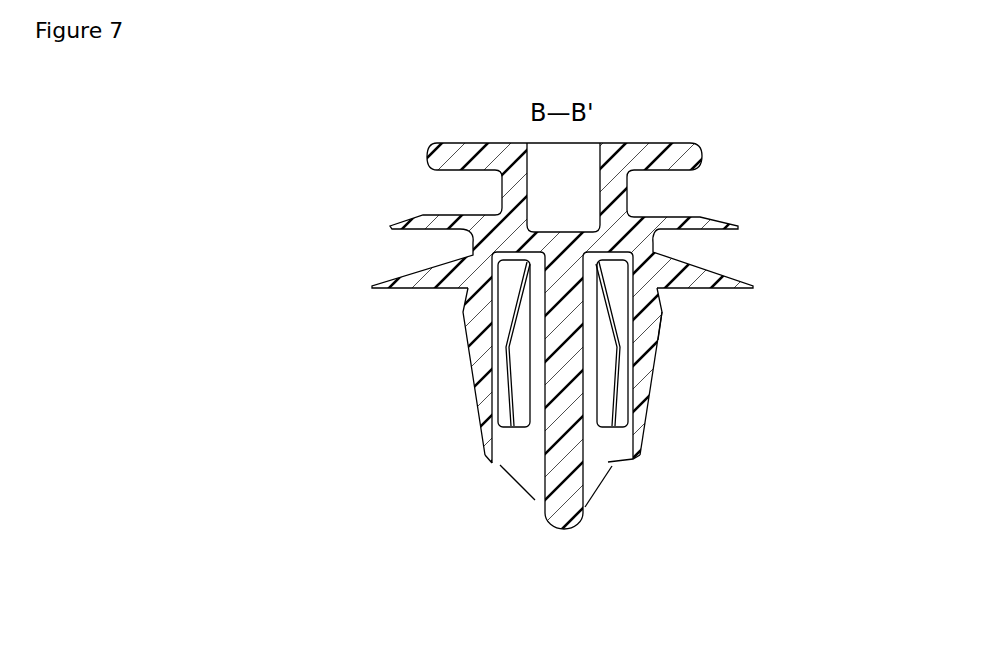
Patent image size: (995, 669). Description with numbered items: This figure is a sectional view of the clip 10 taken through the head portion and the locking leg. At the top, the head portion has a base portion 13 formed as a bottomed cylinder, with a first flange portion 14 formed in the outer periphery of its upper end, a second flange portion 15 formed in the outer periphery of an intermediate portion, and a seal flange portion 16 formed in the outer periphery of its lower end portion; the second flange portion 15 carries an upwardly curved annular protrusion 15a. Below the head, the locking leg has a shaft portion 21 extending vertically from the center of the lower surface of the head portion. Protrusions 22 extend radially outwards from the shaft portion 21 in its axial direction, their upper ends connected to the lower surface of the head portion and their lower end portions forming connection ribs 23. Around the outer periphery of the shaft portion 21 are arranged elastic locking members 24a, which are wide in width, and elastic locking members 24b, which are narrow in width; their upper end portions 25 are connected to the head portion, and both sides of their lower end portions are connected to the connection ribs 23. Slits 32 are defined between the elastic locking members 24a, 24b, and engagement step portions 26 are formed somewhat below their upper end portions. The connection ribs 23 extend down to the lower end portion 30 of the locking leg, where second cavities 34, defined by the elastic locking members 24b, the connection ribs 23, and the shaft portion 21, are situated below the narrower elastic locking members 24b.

The clip 10 is at (733, 143).
The base portion 13 is at (502, 186).
The first flange portion 14 is at (430, 151).
The second flange portion 15 is at (390, 227).
The annular protrusion 15a is at (703, 214).
The seal flange portion 16 is at (372, 287).
The shaft portion 21 is at (547, 441).
The protrusions 22 is at (537, 396).
The connection ribs 23 is at (530, 493).
The elastic locking members 24a is at (607, 387).
The elastic locking members 24b is at (468, 355).
The upper end portions 25 is at (712, 290).
The engagement step portions 26 is at (662, 300).
The lower end portion 30 is at (568, 530).
The slits 32 is at (617, 312).
The second cavities 34 is at (588, 478).